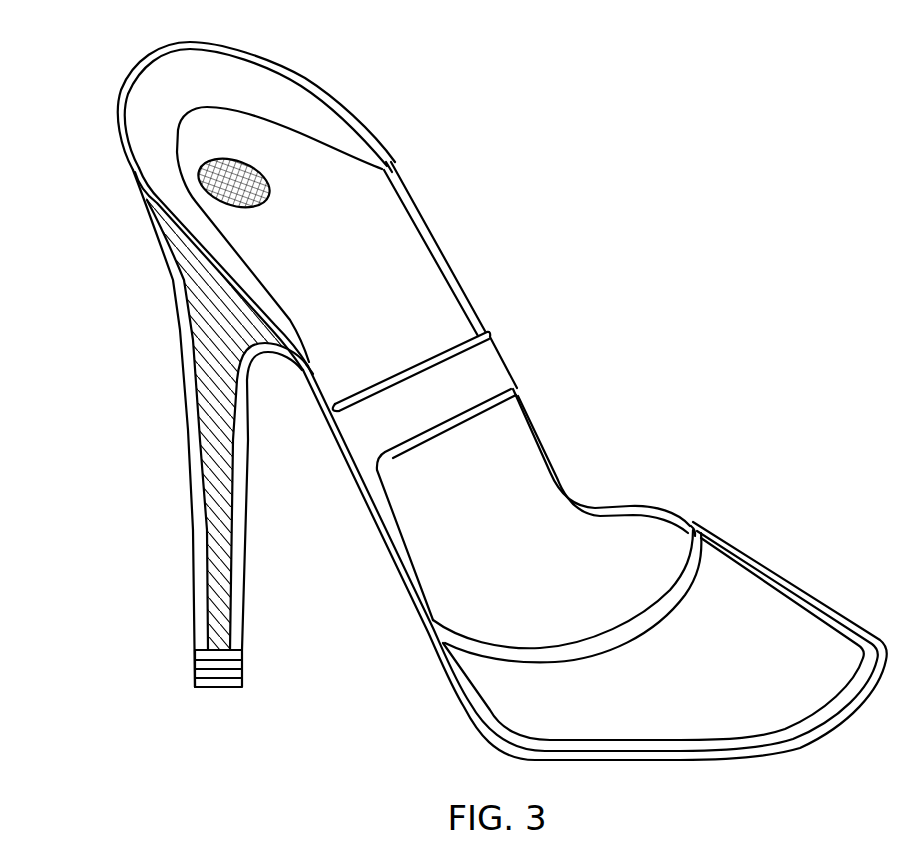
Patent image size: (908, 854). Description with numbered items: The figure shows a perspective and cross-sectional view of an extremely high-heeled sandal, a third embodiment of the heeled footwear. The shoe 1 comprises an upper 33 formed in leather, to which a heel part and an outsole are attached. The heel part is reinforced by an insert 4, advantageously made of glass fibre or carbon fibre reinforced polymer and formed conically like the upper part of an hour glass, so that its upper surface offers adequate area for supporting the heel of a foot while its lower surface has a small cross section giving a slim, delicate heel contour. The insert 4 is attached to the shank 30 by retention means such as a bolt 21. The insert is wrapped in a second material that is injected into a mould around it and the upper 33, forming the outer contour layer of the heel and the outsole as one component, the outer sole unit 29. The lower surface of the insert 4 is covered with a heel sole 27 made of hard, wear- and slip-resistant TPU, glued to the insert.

The shoe 1 is at (728, 215).
The insert 4 is at (216, 476).
The bolt 21 is at (243, 183).
The heel sole 27 is at (220, 690).
The outer sole unit 29 is at (337, 433).
The shank 30 is at (423, 278).
The upper 33 is at (750, 624).